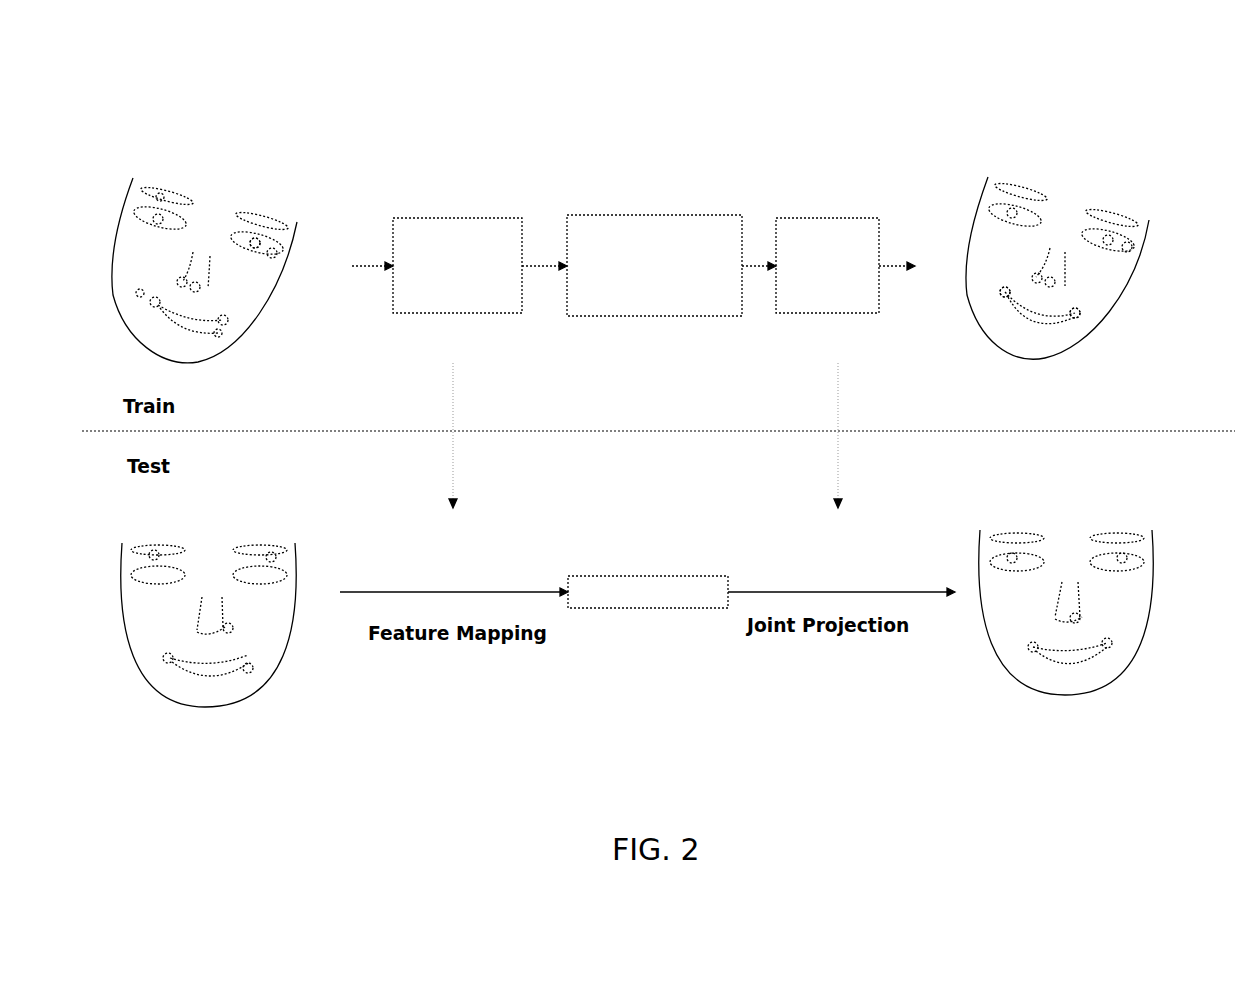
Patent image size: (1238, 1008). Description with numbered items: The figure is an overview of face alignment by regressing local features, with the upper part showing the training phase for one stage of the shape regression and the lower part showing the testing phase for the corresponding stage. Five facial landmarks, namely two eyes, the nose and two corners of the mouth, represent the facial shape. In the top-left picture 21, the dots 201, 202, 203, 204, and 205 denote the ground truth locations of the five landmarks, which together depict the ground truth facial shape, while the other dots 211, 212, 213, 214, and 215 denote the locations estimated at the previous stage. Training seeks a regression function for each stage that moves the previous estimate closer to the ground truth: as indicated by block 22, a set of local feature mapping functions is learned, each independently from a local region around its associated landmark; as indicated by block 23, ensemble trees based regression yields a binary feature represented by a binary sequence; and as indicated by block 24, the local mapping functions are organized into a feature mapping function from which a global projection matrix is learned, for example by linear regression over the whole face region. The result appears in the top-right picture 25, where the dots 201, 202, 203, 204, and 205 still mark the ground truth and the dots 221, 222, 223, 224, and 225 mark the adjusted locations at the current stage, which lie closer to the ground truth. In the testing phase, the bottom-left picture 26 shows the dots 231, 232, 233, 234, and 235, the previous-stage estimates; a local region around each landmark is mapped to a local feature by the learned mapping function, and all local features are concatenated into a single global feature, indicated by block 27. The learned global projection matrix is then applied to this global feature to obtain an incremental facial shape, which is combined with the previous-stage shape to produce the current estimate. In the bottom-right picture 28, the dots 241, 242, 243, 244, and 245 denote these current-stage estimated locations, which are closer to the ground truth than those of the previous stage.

The top-left picture 21 is at (240, 137).
The block for learning local feature mapping functions 22 is at (462, 216).
The block for binary feature 23 is at (660, 214).
The block for learning global projection matrix 24 is at (835, 214).
The top-right picture 25 is at (1040, 157).
The bottom-left picture 26 is at (243, 508).
The global feature 27 is at (645, 517).
The bottom-right picture 28 is at (1038, 498).
The ground truth location of first facial landmark 201 is at (172, 220).
The ground truth location of second facial landmark 202 is at (276, 251).
The ground truth location of third facial landmark 203 is at (200, 287).
The ground truth location of fourth facial landmark 204 is at (153, 306).
The ground truth location of fifth facial landmark 205 is at (228, 320).
The previous-stage estimated location of first facial landmark 211 is at (160, 193).
The previous-stage estimated location of second facial landmark 212 is at (259, 247).
The previous-stage estimated location of third facial landmark 213 is at (179, 279).
The previous-stage estimated location of fourth facial landmark 214 is at (137, 291).
The previous-stage estimated location of fifth facial landmark 215 is at (220, 336).
The current-stage adjusted location of first facial landmark 221 is at (1011, 208).
The current-stage adjusted location of second facial landmark 222 is at (1131, 250).
The current-stage adjusted location of third facial landmark 223 is at (1034, 275).
The current-stage adjusted location of fourth facial landmark 224 is at (1002, 289).
The current-stage adjusted location of fifth facial landmark 225 is at (1078, 317).
The previous-stage estimated location of first facial landmark (testing) 231 is at (152, 551).
The previous-stage estimated location of second facial landmark (testing) 232 is at (276, 557).
The previous-stage estimated location of third facial landmark (testing) 233 is at (224, 627).
The previous-stage estimated location of fourth facial landmark (testing) 234 is at (164, 656).
The previous-stage estimated location of fifth facial landmark (testing) 235 is at (252, 671).
The current-stage estimated location of first facial landmark 241 is at (1010, 553).
The current-stage estimated location of second facial landmark 242 is at (1127, 556).
The current-stage estimated location of third facial landmark 243 is at (1070, 616).
The current-stage estimated location of fourth facial landmark 244 is at (1029, 645).
The current-stage estimated location of fifth facial landmark 245 is at (1111, 647).